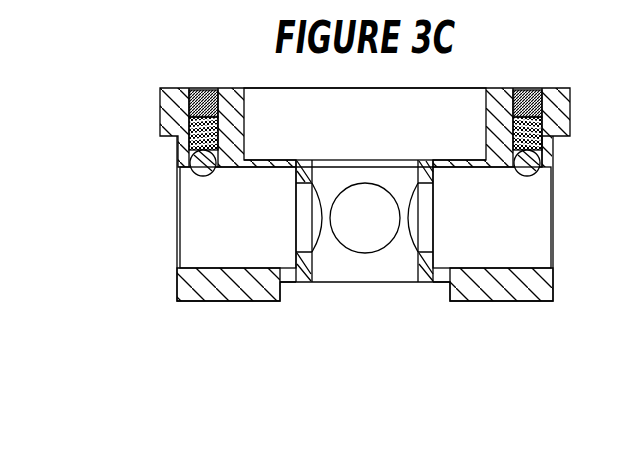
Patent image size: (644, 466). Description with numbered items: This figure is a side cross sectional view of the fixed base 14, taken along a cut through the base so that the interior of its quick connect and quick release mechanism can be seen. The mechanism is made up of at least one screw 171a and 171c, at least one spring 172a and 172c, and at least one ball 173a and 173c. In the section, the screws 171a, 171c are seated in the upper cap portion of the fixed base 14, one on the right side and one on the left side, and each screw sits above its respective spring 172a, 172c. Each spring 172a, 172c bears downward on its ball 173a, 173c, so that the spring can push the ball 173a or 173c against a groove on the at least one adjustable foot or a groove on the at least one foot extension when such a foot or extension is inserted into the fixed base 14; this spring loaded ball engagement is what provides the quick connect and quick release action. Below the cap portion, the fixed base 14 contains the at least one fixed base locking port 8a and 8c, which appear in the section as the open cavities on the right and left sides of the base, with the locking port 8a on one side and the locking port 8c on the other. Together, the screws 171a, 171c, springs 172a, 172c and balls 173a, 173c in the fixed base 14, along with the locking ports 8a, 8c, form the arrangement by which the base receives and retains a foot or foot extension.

The fixed base 14 is at (571, 112).
The screw 171c is at (205, 89).
The spring 172c is at (191, 138).
The ball 173c is at (195, 170).
The screw 171a is at (530, 89).
The spring 172a is at (543, 142).
The ball 173a is at (537, 171).
The fixed base locking port 8c is at (172, 243).
The fixed base locking port 8a is at (558, 243).